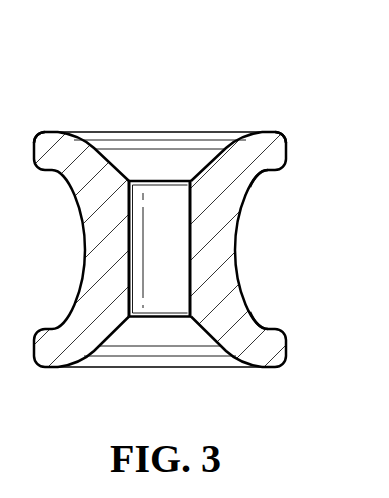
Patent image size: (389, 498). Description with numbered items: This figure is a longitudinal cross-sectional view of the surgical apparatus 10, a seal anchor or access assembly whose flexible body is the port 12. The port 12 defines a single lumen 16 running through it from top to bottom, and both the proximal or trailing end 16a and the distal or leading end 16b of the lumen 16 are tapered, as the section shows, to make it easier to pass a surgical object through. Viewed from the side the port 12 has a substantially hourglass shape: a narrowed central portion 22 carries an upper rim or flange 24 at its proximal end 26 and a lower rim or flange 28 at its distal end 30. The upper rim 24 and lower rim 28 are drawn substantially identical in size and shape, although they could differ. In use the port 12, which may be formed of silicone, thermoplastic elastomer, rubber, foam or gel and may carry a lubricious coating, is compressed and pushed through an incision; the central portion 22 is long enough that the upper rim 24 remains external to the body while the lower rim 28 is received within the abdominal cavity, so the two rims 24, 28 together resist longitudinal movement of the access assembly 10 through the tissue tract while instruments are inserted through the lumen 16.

The surgical apparatus 10 is at (243, 78).
The port 12 is at (100, 227).
The lumen 16 is at (131, 300).
The proximal end of lumen 16a is at (98, 160).
The distal end of lumen 16b is at (222, 341).
The central portion 22 is at (244, 242).
The upper rim 24 is at (277, 133).
The proximal end of central portion 26 is at (263, 177).
The lower rim 28 is at (271, 331).
The distal end of central portion 30 is at (264, 318).